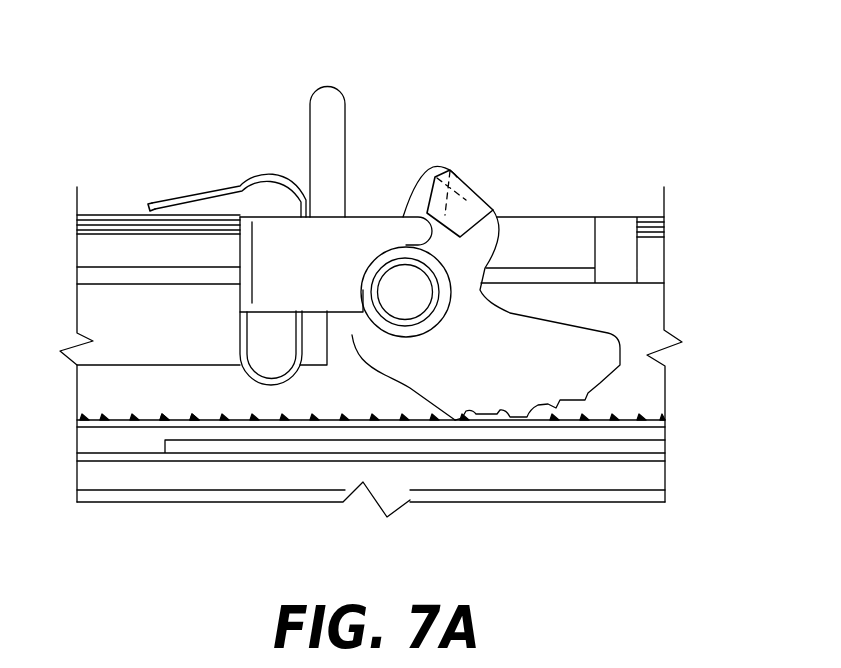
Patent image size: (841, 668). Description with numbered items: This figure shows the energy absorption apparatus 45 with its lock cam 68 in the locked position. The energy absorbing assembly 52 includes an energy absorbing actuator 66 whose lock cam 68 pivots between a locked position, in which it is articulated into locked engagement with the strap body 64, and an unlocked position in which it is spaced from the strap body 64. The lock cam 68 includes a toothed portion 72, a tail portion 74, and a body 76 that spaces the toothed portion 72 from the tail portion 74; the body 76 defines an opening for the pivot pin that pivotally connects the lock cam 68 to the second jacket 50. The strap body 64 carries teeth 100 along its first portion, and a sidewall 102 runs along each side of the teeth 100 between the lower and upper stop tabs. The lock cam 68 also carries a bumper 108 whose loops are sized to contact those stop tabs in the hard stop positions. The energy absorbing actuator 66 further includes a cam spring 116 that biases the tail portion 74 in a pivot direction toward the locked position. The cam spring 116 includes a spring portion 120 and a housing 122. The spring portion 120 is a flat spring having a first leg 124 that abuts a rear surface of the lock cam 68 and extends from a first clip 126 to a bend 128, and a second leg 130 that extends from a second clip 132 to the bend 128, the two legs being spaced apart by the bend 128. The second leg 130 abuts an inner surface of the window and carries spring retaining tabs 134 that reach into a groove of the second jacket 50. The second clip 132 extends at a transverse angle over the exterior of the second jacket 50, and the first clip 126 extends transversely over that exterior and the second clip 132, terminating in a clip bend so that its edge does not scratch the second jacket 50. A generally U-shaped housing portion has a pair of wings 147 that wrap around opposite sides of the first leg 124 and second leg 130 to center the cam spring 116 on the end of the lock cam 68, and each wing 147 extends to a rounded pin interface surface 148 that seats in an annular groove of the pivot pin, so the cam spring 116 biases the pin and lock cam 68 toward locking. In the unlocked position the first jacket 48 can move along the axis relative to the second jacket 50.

The cable adjuster assembly 45 is at (694, 86).
The first jacket 48 is at (662, 502).
The second jacket 50 is at (92, 210).
The energy absorbing assembly 52 is at (678, 224).
The strap body 64 is at (669, 393).
The energy absorbing actuator 66 is at (415, 134).
The lock cam 68 is at (328, 84).
The toothed portion 72 is at (548, 388).
The tail portion 74 is at (310, 145).
The body 76 is at (481, 288).
The teeth 100 is at (167, 422).
The sidewall 102 is at (123, 388).
The bumper 108 is at (465, 170).
The cam spring 116 is at (219, 187).
The spring portion 120 is at (241, 374).
The housing 122 is at (326, 216).
The first leg 124 is at (312, 281).
The first clip 126 is at (246, 185).
The bend 128 is at (265, 386).
The second leg 130 is at (240, 346).
The second clip 132 is at (205, 198).
The spring retaining tabs 134 is at (237, 292).
The wings 147 is at (312, 281).
The pin interface surface 148 is at (363, 267).